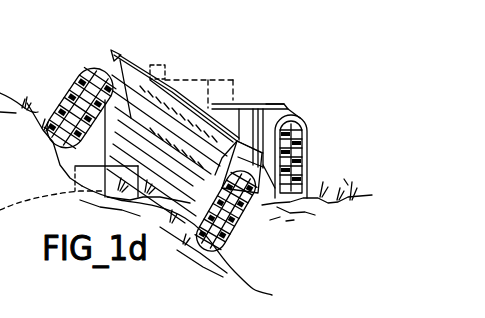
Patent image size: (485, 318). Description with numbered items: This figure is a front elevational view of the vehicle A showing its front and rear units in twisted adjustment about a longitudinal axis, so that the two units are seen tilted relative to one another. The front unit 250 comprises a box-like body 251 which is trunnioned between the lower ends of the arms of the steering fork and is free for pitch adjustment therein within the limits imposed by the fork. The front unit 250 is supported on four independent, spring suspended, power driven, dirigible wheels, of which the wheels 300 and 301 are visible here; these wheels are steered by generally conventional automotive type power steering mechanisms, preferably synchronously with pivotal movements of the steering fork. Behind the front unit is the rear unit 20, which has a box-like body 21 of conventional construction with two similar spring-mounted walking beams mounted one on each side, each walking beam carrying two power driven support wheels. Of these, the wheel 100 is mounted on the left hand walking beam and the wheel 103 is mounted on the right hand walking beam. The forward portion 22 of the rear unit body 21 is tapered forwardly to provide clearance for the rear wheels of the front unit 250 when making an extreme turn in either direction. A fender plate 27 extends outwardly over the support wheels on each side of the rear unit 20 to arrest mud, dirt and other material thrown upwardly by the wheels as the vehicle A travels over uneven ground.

The front unit 250 is at (112, 53).
The box-like body 251 is at (177, 108).
The vehicle A is at (163, 56).
The box-like body 21 is at (250, 108).
The forward portion 22 is at (194, 86).
The rear unit 20 is at (294, 60).
The fender plate 27 is at (281, 104).
The support wheel 100 is at (306, 138).
The support wheel 103 is at (77, 165).
The dirigible wheel 301 is at (86, 79).
The dirigible wheel 300 is at (243, 213).